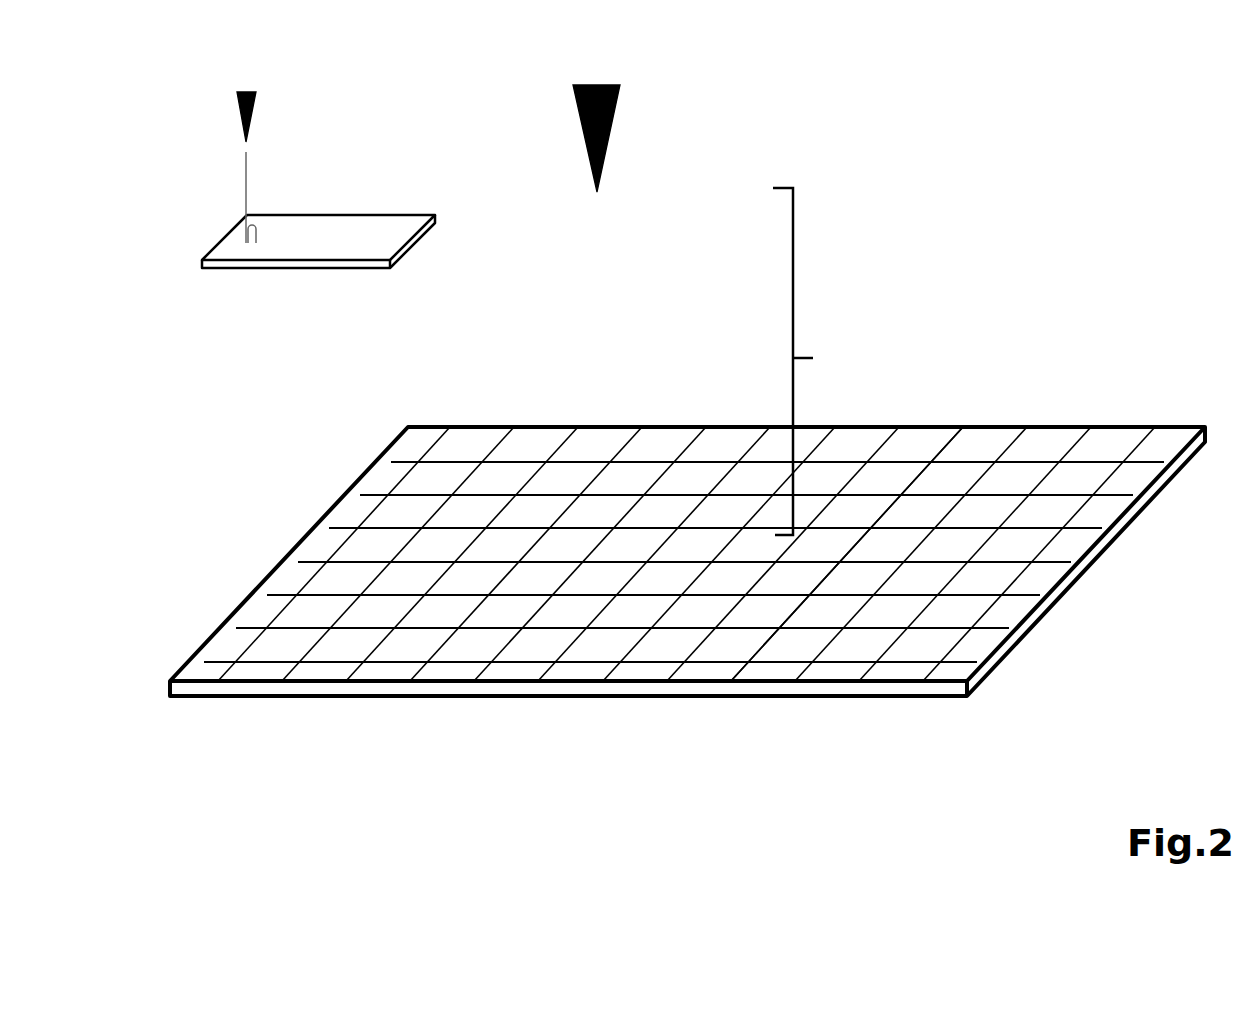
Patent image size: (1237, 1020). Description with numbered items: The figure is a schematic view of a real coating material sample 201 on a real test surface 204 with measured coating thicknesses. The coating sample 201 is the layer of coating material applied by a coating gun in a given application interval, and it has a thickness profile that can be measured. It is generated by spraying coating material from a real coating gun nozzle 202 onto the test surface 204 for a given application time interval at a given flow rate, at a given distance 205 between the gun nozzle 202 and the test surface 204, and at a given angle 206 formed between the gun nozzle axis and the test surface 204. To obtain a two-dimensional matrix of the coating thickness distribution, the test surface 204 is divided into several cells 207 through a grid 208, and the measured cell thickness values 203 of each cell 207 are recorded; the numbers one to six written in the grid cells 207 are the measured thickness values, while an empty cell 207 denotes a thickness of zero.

The coating material sample 201 is at (595, 628).
The coating gun nozzle 202 is at (258, 122).
The measured cell thickness values 203 is at (492, 480).
The test surface 204 is at (343, 268).
The distance 205 is at (830, 357).
The angle 206 is at (267, 227).
The cells 207 is at (1050, 440).
The grid 208 is at (937, 523).